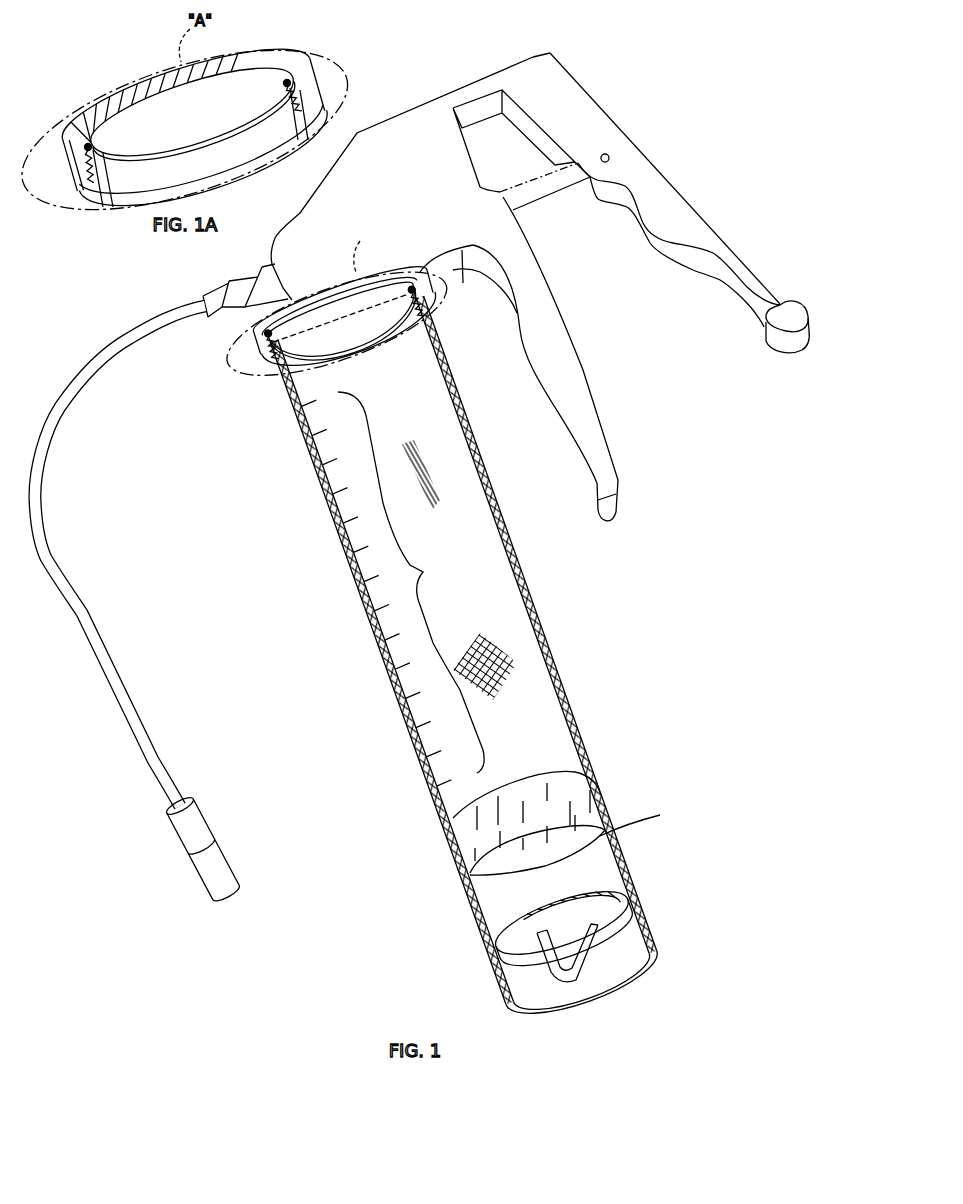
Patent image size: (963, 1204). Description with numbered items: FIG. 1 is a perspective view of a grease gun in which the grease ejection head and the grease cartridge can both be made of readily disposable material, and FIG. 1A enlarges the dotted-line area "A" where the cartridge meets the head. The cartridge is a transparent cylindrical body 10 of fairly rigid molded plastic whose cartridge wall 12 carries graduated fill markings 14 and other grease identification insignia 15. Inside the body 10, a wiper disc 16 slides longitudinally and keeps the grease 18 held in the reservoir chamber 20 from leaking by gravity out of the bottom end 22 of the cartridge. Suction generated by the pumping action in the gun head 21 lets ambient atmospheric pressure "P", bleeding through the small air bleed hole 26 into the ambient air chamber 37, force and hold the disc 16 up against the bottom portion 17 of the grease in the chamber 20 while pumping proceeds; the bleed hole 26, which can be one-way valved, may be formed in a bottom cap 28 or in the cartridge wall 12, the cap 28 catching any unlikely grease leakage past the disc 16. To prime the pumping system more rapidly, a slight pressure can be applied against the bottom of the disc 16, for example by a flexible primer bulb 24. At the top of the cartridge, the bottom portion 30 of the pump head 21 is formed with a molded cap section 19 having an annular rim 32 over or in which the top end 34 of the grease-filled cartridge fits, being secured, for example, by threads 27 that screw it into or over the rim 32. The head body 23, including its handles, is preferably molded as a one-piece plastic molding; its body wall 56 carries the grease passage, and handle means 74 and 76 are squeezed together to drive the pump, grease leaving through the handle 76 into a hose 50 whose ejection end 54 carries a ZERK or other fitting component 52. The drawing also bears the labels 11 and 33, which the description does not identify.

In FIG. 1, the transparent cylindrical body 10 is at (451, 633).
In FIG. 1, the barrel 11 is at (593, 728).
In FIG. 1, the cartridge wall 12 is at (336, 526).
In FIG. 1, the graduated fill markings 14 is at (421, 573).
In FIG. 1, the grease identification insignia 15 is at (430, 473).
In FIG. 1, the wiper disc 16 is at (586, 806).
In FIG. 1, the bottom portion of the grease 17 is at (513, 795).
In FIG. 1, the grease 18 is at (515, 656).
In FIG. 1A, the molded cap section 19 is at (134, 67).
In FIG. 1, the reservoir chamber 20 is at (457, 598).
In FIG. 1, the gun head 21 is at (506, 287).
In FIG. 1, the bottom end 22 is at (513, 1001).
In FIG. 1, the head body 23 is at (389, 170).
In FIG. 1, the flexible primer bulb 24 is at (521, 976).
In FIG. 1, the air bleed hole 26 is at (618, 891).
In FIG. 1A, the threads 27 is at (310, 62).
In FIG. 1, the bottom cap 28 is at (505, 941).
In FIG. 1, the bottom portion of the pump head 30 is at (463, 282).
In FIG. 1A, the annular rim 32 is at (320, 88).
In FIG. 1A, the seal 33 is at (192, 80).
In FIG. 1, the seal 33 is at (320, 332).
In FIG. 1A, the top end of the cartridge 34 is at (213, 133).
In FIG. 1, the ambient air chamber 37 is at (614, 870).
In FIG. 1, the hose 50 is at (88, 613).
In FIG. 1, the fitting component 52 is at (214, 860).
In FIG. 1, the ejection end 54 is at (181, 786).
In FIG. 1, the body wall 56 is at (467, 147).
In FIG. 1, the handle means 74 is at (645, 152).
In FIG. 1, the handle 76 is at (581, 382).